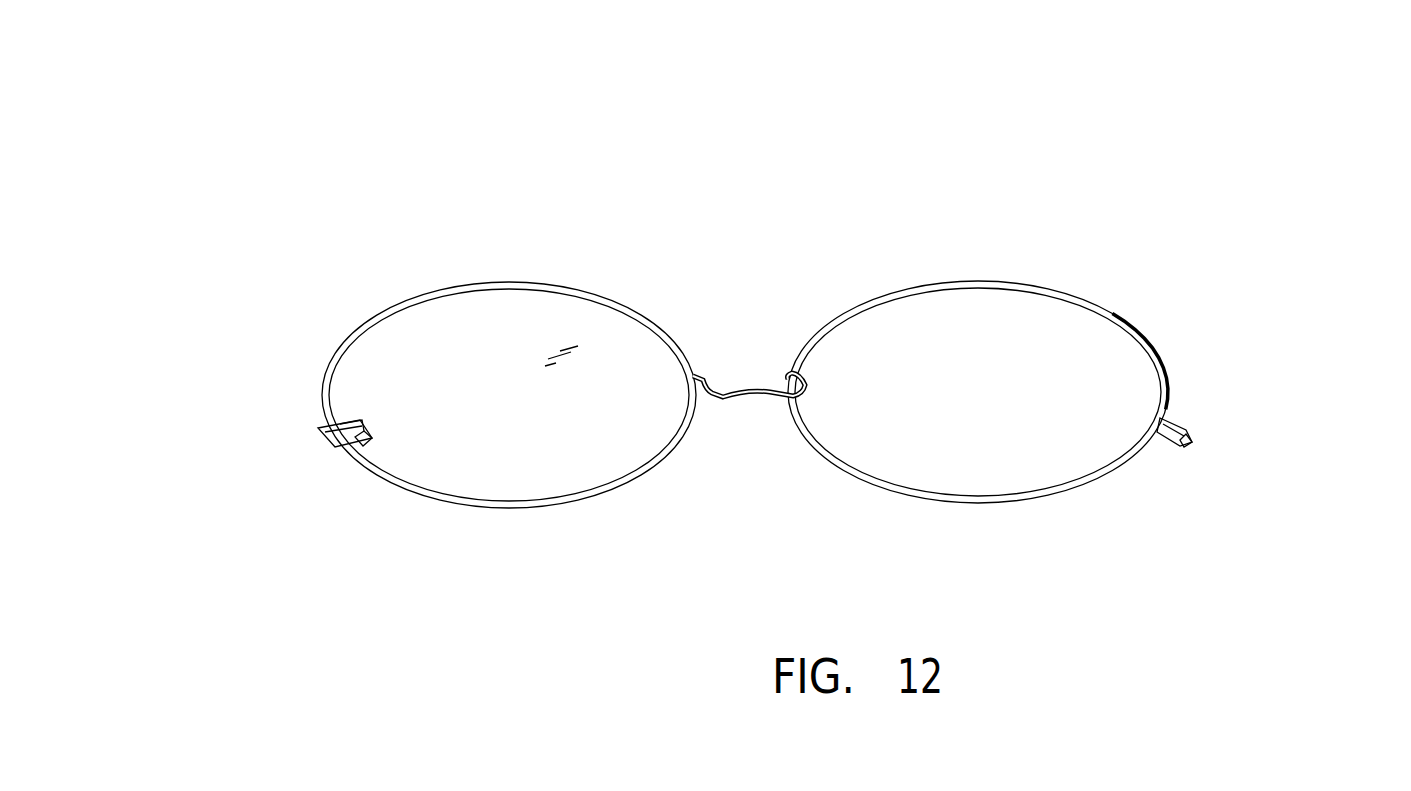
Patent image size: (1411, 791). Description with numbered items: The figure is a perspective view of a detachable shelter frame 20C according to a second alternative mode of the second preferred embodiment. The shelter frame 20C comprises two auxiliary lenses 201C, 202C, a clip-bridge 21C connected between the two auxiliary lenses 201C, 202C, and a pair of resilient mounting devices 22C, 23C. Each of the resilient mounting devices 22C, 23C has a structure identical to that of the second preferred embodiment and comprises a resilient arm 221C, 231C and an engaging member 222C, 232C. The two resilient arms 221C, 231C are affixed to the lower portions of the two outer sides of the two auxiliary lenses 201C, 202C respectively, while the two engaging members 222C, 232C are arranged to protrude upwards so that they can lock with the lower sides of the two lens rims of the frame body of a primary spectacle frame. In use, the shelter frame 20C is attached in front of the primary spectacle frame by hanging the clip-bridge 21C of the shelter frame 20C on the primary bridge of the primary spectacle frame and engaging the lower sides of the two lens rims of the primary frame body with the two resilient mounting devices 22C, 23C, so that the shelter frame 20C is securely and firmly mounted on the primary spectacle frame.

The detachable shelter frame 20C is at (802, 160).
The auxiliary lens 201C is at (497, 316).
The auxiliary lens 202C is at (977, 306).
The clip-bridge 21C is at (753, 403).
The resilient mounting device 22C is at (150, 423).
The resilient arm 221C is at (325, 426).
The engaging member 222C is at (352, 423).
The resilient mounting device 23C is at (1302, 343).
The resilient arm 231C is at (1178, 413).
The engaging member 232C is at (1163, 440).